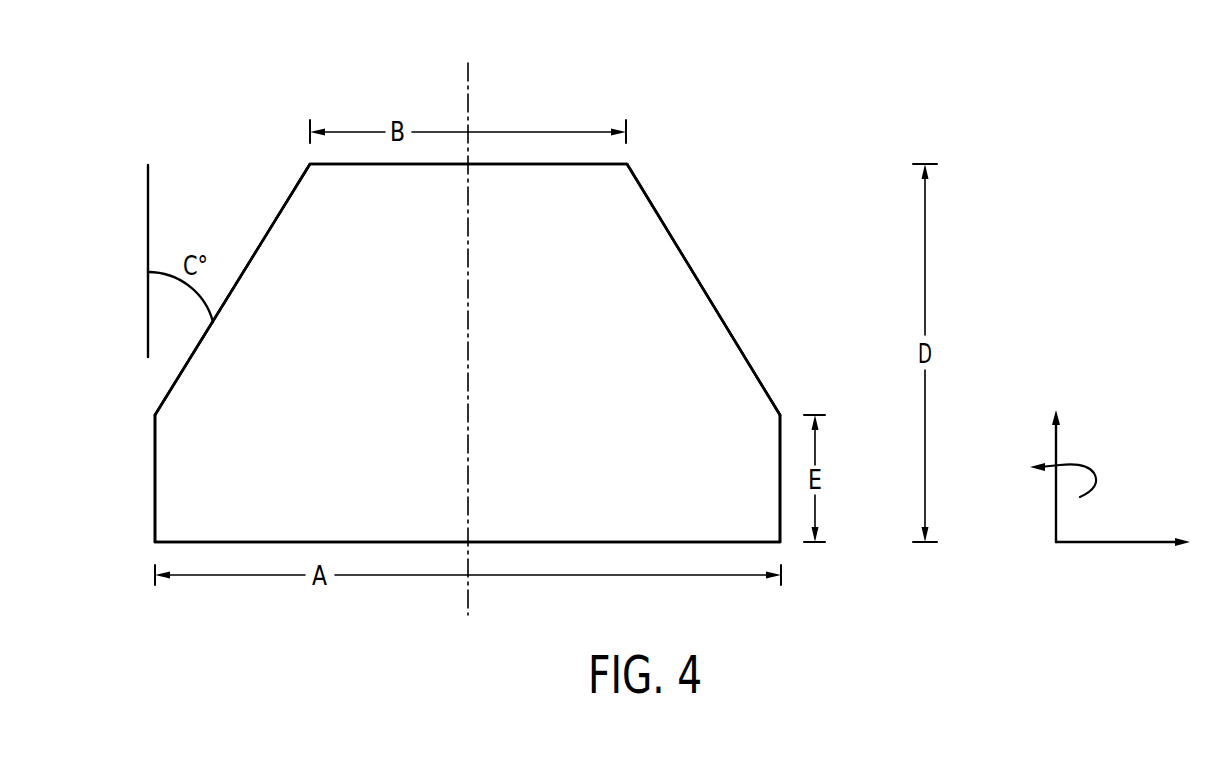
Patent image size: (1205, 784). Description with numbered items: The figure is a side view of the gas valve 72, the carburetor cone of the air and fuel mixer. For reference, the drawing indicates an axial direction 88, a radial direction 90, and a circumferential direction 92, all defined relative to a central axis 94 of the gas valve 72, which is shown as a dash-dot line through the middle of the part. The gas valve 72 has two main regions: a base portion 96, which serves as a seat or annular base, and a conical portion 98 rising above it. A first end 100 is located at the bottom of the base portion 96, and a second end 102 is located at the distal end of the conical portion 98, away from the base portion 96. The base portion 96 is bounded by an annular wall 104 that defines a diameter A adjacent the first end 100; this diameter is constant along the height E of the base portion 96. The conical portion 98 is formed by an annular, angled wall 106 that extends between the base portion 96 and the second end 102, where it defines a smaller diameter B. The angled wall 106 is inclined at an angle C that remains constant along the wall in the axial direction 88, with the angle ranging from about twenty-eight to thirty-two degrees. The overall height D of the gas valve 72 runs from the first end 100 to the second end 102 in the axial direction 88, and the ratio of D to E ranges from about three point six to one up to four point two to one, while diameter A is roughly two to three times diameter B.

The gas valve 72 is at (209, 160).
The axial direction 88 is at (1056, 515).
The radial direction 90 is at (1115, 543).
The circumferential direction 92 is at (1087, 468).
The central axis 94 is at (470, 90).
The base portion 96 is at (155, 478).
The conical portion 98 is at (251, 259).
The first end 100 is at (176, 542).
The second end 102 is at (608, 163).
The annular wall 104 is at (782, 437).
The angled wall 106 is at (705, 290).